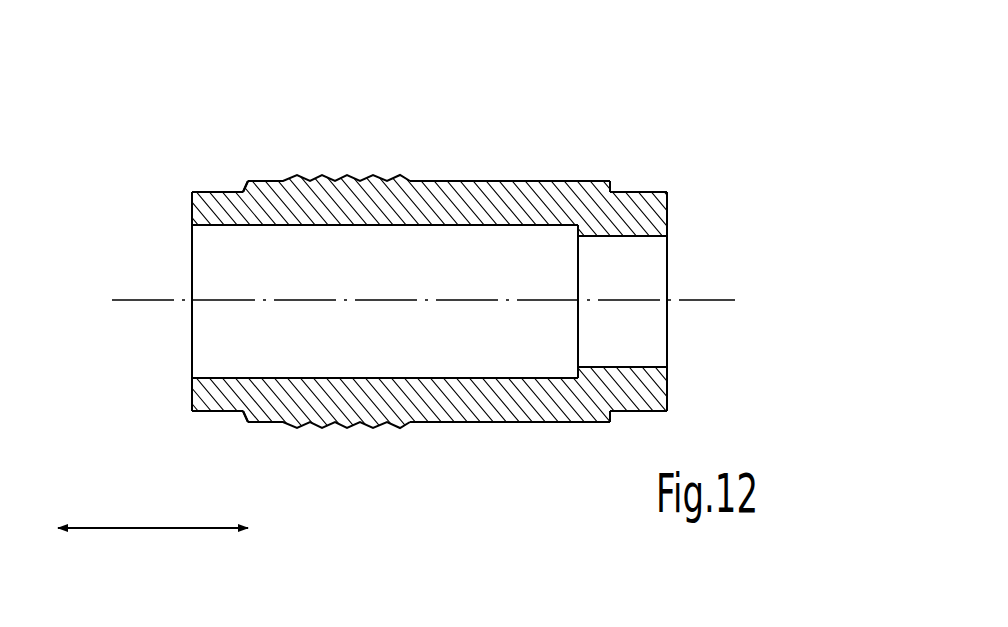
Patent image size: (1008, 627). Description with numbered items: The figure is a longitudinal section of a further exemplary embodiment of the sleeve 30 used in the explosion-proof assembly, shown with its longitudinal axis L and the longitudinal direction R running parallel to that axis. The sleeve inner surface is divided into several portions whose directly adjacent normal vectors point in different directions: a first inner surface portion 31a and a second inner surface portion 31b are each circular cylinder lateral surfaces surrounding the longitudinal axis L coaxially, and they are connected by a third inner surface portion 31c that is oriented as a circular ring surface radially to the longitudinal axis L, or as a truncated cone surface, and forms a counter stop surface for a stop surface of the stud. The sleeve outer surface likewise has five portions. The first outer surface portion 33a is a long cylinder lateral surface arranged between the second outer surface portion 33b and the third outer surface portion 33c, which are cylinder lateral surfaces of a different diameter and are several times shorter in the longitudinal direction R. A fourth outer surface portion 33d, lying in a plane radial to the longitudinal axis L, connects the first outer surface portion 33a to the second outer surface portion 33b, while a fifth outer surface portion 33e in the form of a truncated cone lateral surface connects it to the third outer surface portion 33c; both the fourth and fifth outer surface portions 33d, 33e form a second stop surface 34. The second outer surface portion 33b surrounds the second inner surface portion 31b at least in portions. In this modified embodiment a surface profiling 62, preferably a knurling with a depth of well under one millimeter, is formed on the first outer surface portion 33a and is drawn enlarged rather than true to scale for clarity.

The sleeve 30 is at (727, 230).
The first inner surface portion 31a is at (270, 228).
The second inner surface portion 31b is at (603, 362).
The third inner surface portion 31c is at (575, 229).
The first outer surface portion 33a is at (482, 180).
The second outer surface portion 33b is at (648, 190).
The third outer surface portion 33c is at (207, 190).
The fourth outer surface portion 33d is at (612, 188).
The fifth outer surface portion 33e is at (238, 190).
The second stop surface 34 is at (426, 301).
The surface profiling 62 is at (340, 168).
The longitudinal axis L is at (718, 300).
The longitudinal direction R is at (142, 530).